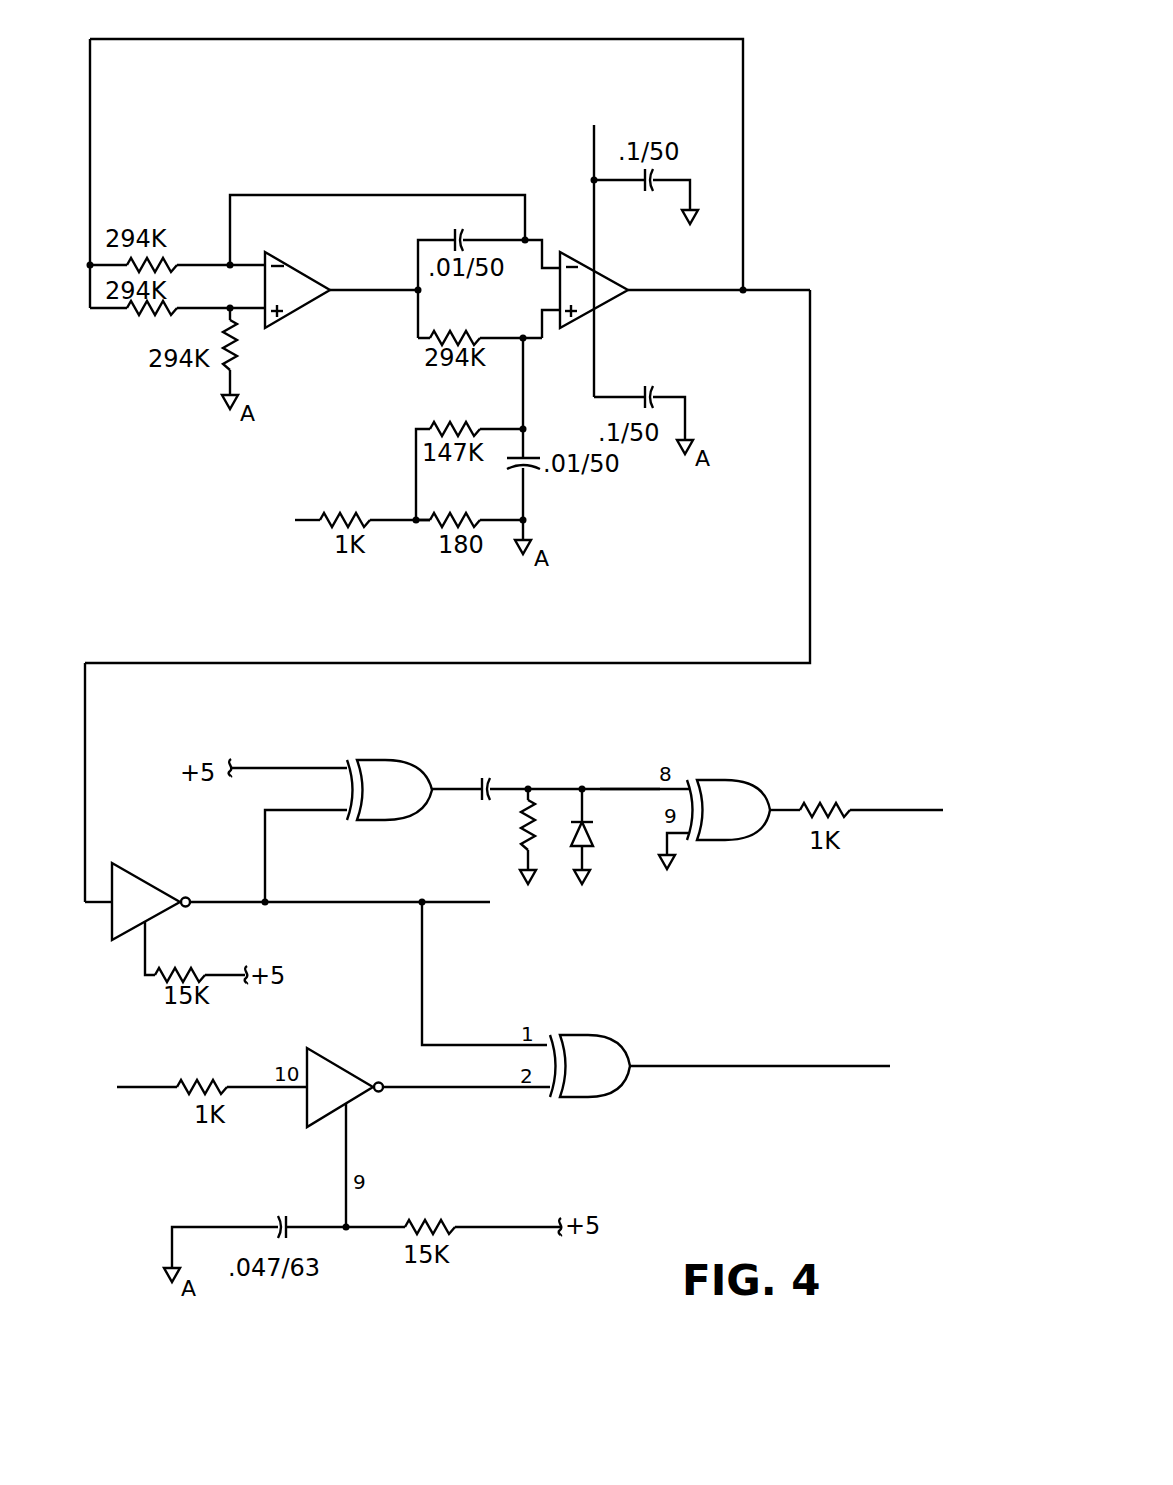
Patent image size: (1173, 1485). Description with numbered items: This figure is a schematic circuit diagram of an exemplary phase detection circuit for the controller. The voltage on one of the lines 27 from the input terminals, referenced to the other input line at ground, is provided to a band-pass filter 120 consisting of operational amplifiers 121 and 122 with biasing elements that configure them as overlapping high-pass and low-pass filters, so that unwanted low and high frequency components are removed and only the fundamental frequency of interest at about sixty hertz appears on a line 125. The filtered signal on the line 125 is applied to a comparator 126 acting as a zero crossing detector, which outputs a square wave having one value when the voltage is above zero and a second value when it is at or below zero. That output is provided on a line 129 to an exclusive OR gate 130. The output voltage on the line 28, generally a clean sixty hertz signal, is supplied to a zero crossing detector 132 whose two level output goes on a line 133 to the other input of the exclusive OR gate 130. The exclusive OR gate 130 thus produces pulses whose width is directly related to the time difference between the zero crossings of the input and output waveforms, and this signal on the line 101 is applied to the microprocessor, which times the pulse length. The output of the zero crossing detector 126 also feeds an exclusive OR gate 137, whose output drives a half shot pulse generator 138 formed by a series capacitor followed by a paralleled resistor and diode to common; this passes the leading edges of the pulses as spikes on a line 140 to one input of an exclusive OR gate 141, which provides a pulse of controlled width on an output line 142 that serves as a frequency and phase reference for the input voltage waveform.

The band-pass filter 120 is at (518, 32).
The operational amplifier 121 is at (598, 276).
The operational amplifier 122 is at (294, 270).
The line 125 is at (815, 599).
The comparator 126 is at (140, 876).
The line 129 is at (424, 950).
The exclusive OR gate 130 is at (562, 1035).
The zero crossing detector 132 is at (332, 1060).
The line 133 is at (487, 1090).
The exclusive OR gate 137 is at (388, 760).
The half shot pulse generator 138 is at (560, 768).
The line 140 is at (612, 787).
The exclusive OR gate 141 is at (727, 792).
The output line 142 is at (936, 815).
The line 27 is at (300, 522).
The line 28 is at (148, 1090).
The line 101 is at (855, 1068).